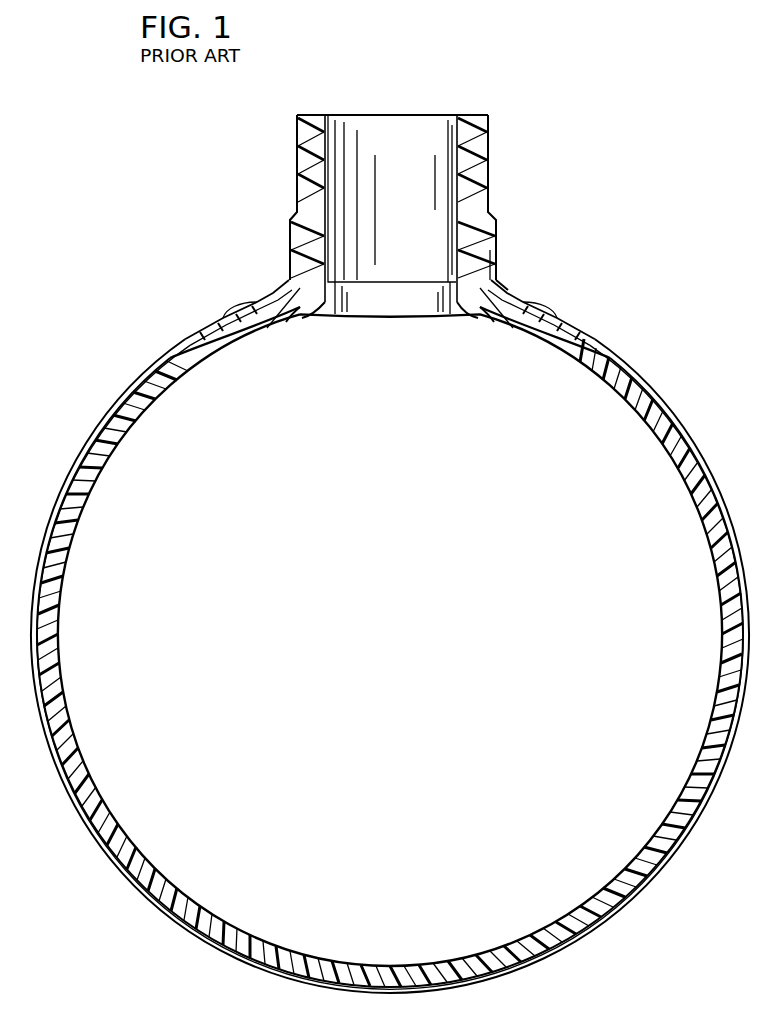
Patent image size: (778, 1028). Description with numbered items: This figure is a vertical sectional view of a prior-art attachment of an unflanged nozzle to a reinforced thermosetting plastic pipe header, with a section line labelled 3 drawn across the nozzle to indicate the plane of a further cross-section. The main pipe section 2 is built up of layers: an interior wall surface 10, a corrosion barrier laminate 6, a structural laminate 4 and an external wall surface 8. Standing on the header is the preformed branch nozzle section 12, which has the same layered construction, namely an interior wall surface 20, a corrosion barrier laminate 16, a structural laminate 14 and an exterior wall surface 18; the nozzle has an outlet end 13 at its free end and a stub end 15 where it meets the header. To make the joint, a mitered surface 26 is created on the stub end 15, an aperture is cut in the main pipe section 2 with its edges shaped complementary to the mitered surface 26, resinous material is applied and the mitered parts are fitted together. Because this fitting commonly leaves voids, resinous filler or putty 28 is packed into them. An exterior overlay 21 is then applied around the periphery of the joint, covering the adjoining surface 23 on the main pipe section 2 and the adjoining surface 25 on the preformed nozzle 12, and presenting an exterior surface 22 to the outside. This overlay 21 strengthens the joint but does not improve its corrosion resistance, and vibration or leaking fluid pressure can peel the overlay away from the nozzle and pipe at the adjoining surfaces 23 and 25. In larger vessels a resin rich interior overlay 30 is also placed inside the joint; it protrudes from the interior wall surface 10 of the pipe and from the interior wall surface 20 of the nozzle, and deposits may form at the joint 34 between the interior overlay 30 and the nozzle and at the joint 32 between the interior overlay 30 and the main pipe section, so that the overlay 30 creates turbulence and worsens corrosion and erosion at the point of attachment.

The main pipe section 2 is at (660, 380).
The section line 3 is at (393, 95).
The structural laminate 4 is at (670, 415).
The corrosion barrier laminate 6 is at (650, 430).
The external wall surface 8 is at (690, 445).
The interior wall surface 10 is at (672, 460).
The preformed branch nozzle section 12 is at (505, 129).
The outlet end 13 is at (405, 125).
The structural laminate 14 is at (480, 152).
The stub end 15 is at (413, 300).
The corrosion barrier laminate 16 is at (465, 165).
The exterior wall surface 18 is at (487, 178).
The interior wall surface 20 is at (457, 140).
The exterior overlay 21 is at (493, 262).
The exterior surface 22 is at (500, 280).
The adjoining surface 23 is at (512, 300).
The adjoining surface 25 is at (497, 242).
The mitered surface 26 is at (490, 318).
The resinous filler or putty 28 is at (455, 318).
The interior overlay 30 is at (322, 318).
The joint 32 is at (295, 322).
The joint 34 is at (330, 272).